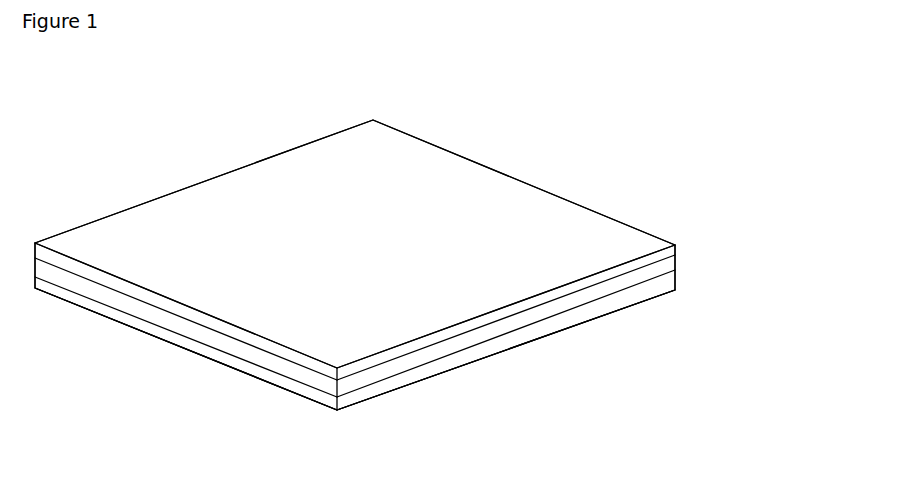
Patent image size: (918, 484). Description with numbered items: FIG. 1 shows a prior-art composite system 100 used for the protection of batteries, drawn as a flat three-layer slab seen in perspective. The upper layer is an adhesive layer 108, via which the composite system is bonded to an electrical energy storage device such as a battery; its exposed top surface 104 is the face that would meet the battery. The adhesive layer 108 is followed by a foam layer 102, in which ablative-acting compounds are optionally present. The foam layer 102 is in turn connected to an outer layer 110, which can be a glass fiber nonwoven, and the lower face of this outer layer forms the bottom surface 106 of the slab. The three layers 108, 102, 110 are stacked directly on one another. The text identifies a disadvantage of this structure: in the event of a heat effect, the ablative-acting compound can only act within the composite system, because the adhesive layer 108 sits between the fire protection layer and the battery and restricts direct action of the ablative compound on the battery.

The laminate assembly 100 is at (226, 124).
The foam layer 102 is at (672, 267).
The top surface 104 is at (453, 197).
The bottom surface 106 is at (223, 373).
The adhesive layer 108 is at (677, 247).
The outer layer 110 is at (677, 288).